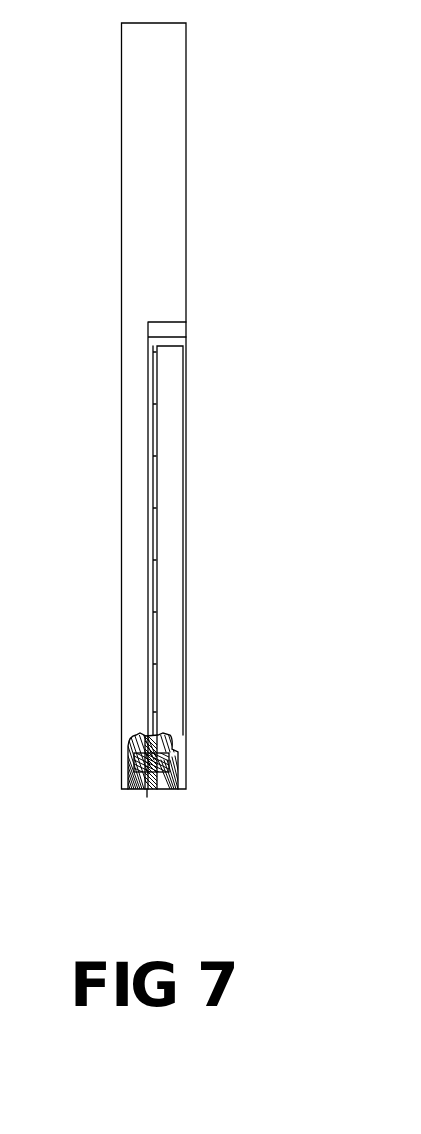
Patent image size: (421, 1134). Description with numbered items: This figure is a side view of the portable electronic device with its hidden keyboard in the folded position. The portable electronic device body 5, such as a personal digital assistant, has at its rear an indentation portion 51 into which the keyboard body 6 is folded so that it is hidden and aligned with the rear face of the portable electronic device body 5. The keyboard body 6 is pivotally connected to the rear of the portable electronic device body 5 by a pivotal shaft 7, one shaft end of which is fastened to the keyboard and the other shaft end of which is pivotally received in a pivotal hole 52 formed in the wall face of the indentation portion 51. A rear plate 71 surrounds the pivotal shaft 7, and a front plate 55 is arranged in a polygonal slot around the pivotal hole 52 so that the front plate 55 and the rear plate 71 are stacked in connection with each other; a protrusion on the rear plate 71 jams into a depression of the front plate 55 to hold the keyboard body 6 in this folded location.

The portable electronic device body 5 is at (187, 110).
The indentation portion 51 is at (155, 358).
The keyboard body 6 is at (172, 542).
The rear plate 71 is at (158, 728).
The pivotal hole 52 is at (135, 747).
The pivotal shaft 7 is at (177, 763).
The front plate 55 is at (147, 797).